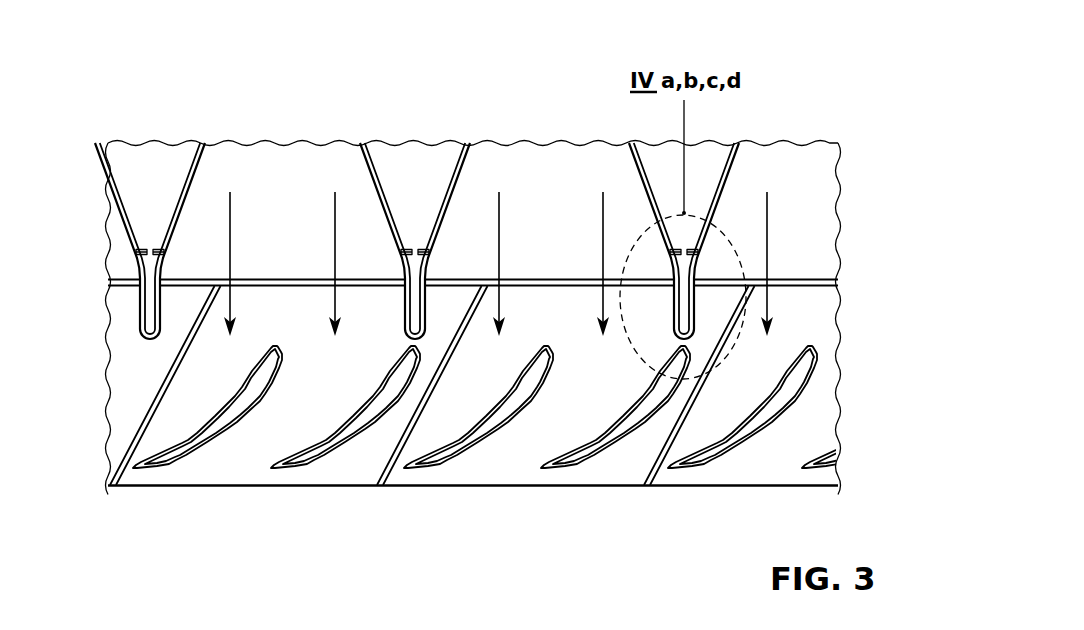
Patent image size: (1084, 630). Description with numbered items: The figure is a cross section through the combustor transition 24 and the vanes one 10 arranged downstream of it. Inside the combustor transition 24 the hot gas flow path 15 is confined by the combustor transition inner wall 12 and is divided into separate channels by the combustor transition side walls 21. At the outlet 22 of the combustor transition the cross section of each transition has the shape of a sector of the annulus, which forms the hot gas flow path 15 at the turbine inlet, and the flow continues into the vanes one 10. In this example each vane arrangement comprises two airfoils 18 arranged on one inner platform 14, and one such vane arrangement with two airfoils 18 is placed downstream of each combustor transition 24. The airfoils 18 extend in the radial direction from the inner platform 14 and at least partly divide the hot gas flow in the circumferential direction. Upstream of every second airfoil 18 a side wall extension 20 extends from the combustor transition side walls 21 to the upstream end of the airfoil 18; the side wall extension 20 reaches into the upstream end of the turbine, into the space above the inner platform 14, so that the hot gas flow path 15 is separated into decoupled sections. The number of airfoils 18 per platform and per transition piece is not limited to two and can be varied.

The vane one 10 is at (171, 567).
The combustor transition inner wall 12 is at (800, 192).
The inner platform 14 is at (535, 440).
The hot gas flow path 15 is at (502, 222).
The airfoils 18 is at (365, 450).
The side wall extension 20 is at (387, 204).
The combustor transition side walls 21 is at (387, 189).
The outlet of the combustor transition 22 is at (183, 283).
The combustor transition 24 is at (214, 43).